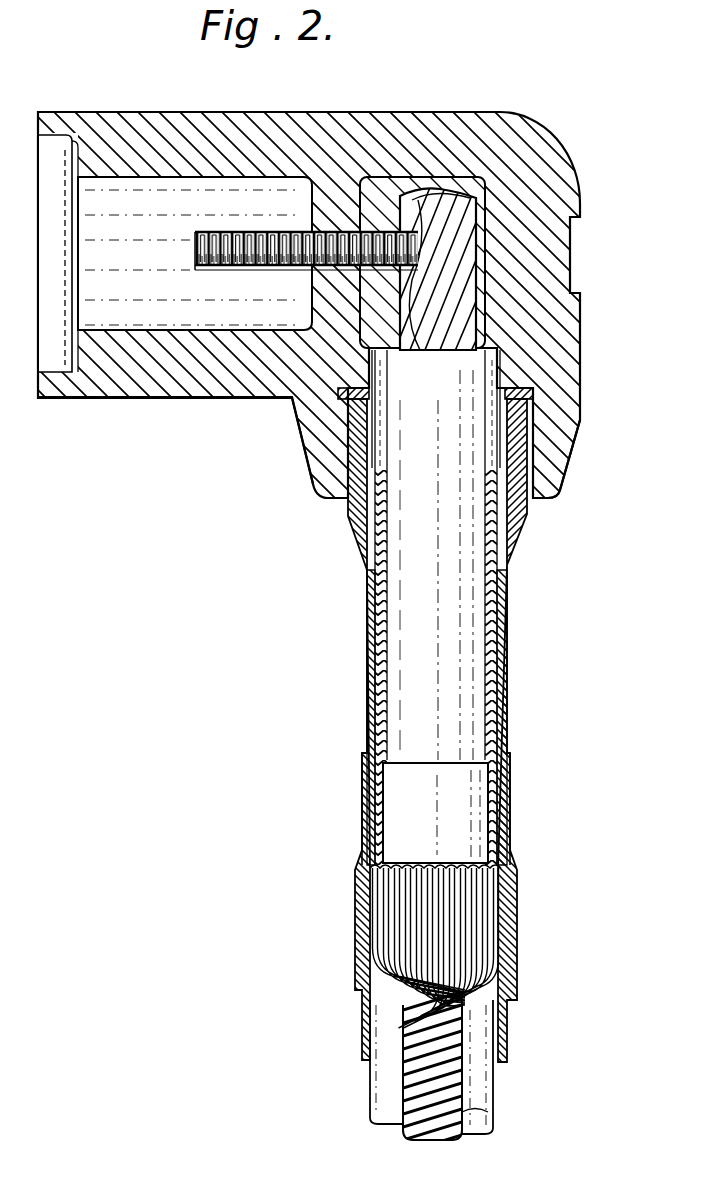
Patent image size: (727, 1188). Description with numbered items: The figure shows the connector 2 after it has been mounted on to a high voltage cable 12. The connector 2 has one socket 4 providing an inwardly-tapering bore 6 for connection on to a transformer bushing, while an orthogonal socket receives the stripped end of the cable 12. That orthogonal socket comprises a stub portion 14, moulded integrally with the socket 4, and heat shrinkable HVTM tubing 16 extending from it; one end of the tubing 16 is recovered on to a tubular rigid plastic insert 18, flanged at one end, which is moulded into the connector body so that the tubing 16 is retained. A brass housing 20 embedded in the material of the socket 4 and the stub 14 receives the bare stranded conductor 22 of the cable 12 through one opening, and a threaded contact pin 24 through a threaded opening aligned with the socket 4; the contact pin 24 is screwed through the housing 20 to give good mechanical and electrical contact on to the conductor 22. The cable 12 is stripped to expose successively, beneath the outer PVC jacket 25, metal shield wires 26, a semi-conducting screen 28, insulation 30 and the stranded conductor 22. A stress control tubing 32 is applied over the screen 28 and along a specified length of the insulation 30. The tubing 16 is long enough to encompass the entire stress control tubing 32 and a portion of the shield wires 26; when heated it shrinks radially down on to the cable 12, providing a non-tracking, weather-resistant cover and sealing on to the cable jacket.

The connector 2 is at (566, 123).
The socket 4 is at (115, 392).
The inwardly-tapering bore 6 is at (97, 213).
The high voltage cable 12 is at (427, 571).
The stub portion 14 is at (552, 487).
The heat shrinkable HVTM tubing 16 is at (370, 731).
The tubular rigid plastic insert 18 is at (358, 434).
The brass housing 20 is at (373, 182).
The stranded conductor 22 is at (440, 196).
The threaded contact pin 24 is at (228, 240).
The outer PVC jacket 25 is at (388, 1092).
The metal shield wires 26 is at (410, 1073).
The semi-conducting screen 28 is at (405, 822).
The insulation 30 is at (410, 615).
The stress control tubing 32 is at (368, 677).